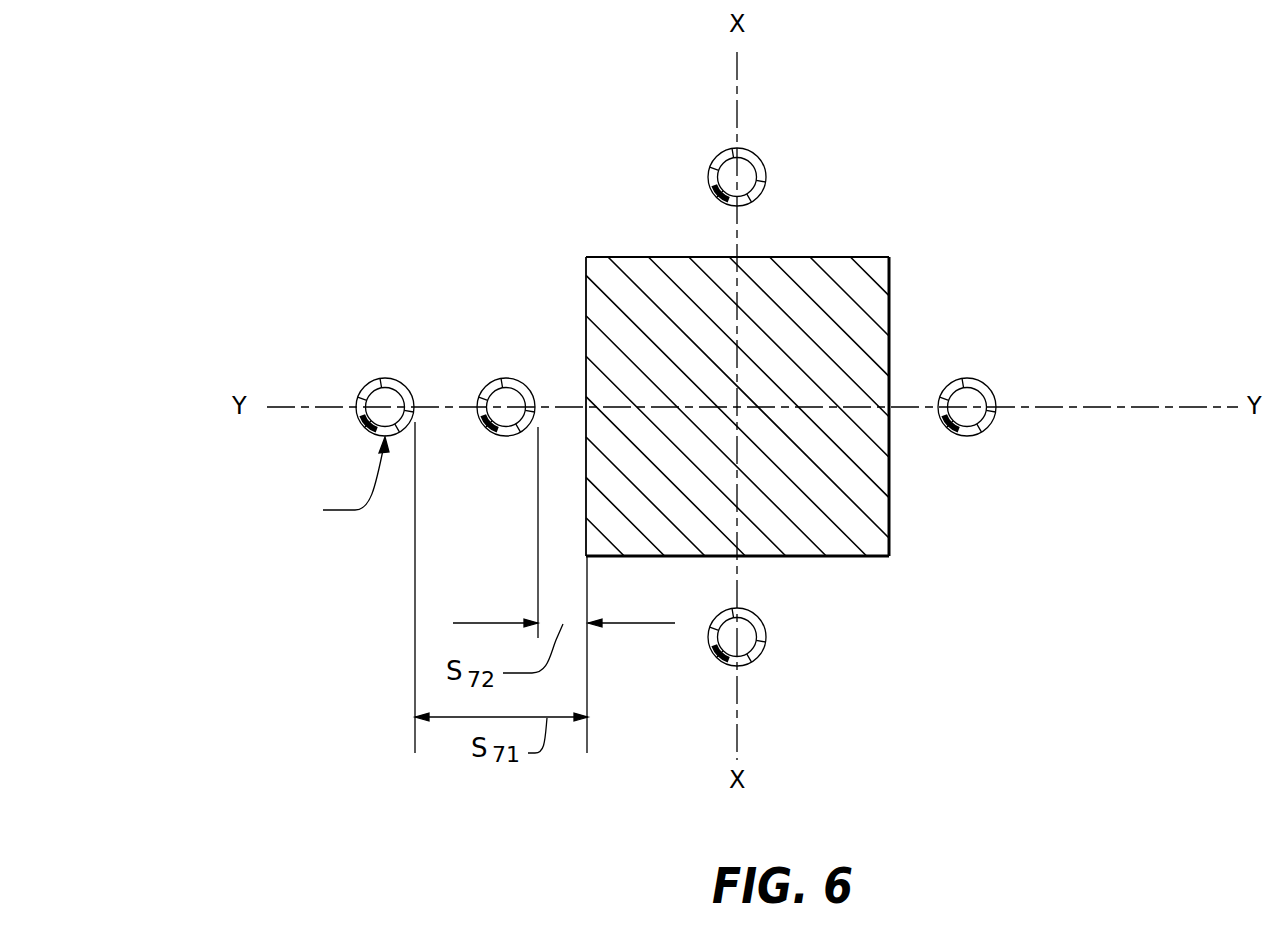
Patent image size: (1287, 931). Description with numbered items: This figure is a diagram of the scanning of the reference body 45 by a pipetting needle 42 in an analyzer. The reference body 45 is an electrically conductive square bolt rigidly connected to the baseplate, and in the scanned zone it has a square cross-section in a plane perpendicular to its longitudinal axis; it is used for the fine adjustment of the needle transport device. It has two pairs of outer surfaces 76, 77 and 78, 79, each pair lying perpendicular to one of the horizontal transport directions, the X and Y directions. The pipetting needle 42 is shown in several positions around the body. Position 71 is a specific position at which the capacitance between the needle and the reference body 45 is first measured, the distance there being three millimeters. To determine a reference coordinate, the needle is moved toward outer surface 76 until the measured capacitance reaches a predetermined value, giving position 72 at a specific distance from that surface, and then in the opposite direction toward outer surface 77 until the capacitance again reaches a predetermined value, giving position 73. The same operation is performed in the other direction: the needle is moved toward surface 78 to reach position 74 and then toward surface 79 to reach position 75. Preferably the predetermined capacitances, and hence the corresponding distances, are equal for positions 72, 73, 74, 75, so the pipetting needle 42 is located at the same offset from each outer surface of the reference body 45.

The pipetting needle 42 is at (337, 482).
The reference body 45 is at (683, 277).
The position of the pipetting needle 71 is at (365, 386).
The position of the pipetting needle 72 is at (492, 382).
The position of the pipetting needle 73 is at (962, 437).
The position of the pipetting needle 74 is at (756, 659).
The position of the pipetting needle 75 is at (745, 148).
The outer surface 76 is at (587, 287).
The outer surface 77 is at (892, 295).
The outer surface 78 is at (800, 557).
The outer surface 79 is at (802, 257).